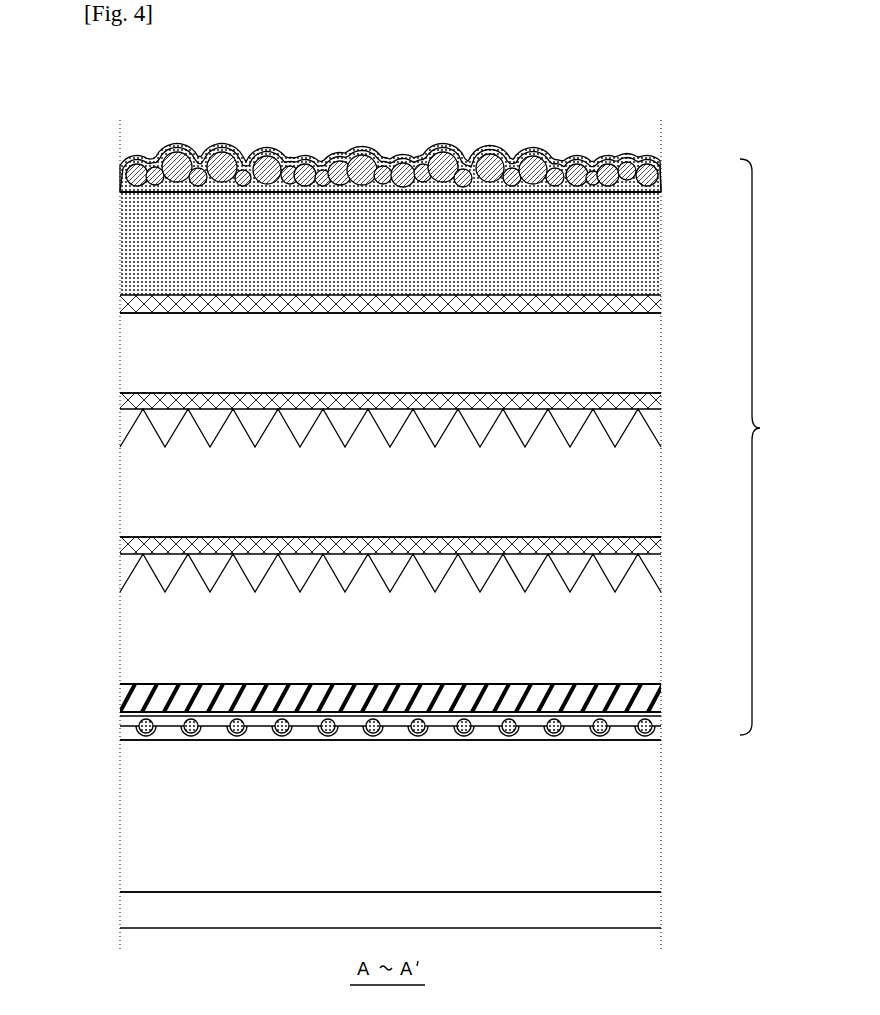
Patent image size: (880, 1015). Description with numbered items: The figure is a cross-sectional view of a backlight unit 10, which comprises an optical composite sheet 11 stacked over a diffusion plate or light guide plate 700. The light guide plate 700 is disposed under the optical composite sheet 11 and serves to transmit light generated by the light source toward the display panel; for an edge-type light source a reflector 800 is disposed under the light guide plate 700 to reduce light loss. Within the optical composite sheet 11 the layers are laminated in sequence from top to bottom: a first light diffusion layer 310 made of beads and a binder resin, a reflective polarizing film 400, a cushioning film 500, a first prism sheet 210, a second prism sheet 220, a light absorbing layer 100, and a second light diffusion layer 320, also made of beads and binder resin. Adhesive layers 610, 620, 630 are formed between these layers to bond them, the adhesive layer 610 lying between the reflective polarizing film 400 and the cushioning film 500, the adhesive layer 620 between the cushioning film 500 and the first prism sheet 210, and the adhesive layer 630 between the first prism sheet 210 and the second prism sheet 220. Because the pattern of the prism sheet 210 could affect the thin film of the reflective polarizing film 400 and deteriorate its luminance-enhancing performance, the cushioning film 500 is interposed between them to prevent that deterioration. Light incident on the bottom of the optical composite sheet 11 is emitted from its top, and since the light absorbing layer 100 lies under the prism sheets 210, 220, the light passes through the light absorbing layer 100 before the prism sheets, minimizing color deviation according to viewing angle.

The backlight unit 10 is at (405, 102).
The optical composite sheet 11 is at (766, 447).
The first light diffusion layer 310 is at (663, 173).
The reflective polarizing film 400 is at (663, 233).
The adhesive layer 610 is at (663, 300).
The cushioning film 500 is at (663, 345).
The adhesive layer 620 is at (663, 400).
The first prism sheet 210 is at (663, 478).
The adhesive layer 630 is at (663, 543).
The second prism sheet 220 is at (663, 618).
The light absorbing layer 100 is at (663, 690).
The second light diffusion layer 320 is at (663, 717).
The light guide plate 700 is at (663, 803).
The reflector 800 is at (663, 905).